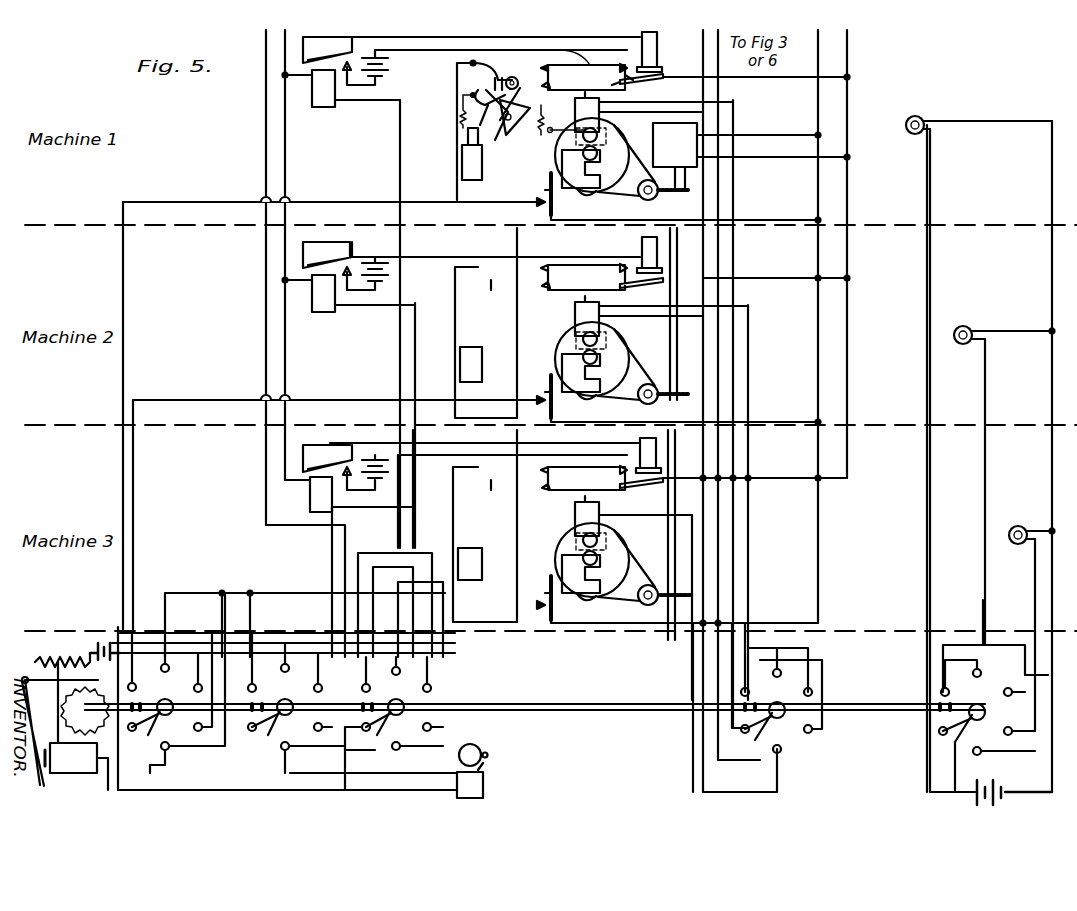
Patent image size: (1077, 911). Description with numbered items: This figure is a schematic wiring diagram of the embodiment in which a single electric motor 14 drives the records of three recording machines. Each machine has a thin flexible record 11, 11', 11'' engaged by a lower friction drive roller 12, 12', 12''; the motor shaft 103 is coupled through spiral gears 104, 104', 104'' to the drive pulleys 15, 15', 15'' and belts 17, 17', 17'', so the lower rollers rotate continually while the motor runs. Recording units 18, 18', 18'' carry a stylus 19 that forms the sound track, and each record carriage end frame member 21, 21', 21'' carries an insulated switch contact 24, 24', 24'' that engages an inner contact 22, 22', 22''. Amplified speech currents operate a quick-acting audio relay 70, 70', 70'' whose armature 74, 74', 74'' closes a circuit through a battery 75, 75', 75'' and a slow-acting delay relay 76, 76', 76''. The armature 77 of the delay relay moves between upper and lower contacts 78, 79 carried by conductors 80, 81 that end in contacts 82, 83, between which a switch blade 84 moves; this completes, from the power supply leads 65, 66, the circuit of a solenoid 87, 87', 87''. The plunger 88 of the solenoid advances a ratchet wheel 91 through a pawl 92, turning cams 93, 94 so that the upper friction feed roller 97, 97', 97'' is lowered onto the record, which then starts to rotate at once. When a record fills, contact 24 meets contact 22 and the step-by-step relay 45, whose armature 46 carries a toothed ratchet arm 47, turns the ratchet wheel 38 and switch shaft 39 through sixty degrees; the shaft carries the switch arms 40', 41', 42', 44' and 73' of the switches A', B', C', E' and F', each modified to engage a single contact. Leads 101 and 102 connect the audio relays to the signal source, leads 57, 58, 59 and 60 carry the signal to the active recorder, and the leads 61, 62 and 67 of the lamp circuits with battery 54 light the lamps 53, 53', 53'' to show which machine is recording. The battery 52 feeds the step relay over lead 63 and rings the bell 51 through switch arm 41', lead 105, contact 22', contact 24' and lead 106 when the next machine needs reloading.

The record 11 is at (617, 155).
The record 11' is at (615, 359).
The record 11'' is at (613, 560).
The friction drive roller 12 is at (592, 167).
The friction drive roller 12' is at (594, 371).
The friction drive roller 12'' is at (593, 572).
The electric motor 14 is at (693, 178).
The drive pulley 15 is at (640, 199).
The drive pulley 15' is at (639, 402).
The drive pulley 15'' is at (636, 604).
The belt 17 is at (626, 170).
The belt 17' is at (626, 375).
The belt 17'' is at (623, 576).
The recording unit 18 is at (641, 111).
The recording unit 18' is at (645, 315).
The recording unit 18'' is at (615, 598).
The stylus 19 is at (598, 133).
The end frame member 21 is at (591, 204).
The record carriage 21' is at (558, 373).
The record carriage 21'' is at (556, 573).
The inner contact 22 is at (515, 195).
The inner contact 22' is at (515, 394).
The inner contact 22'' is at (528, 628).
The switch contact 24 is at (538, 195).
The switch contact 24' is at (538, 397).
The switch contact 24'' is at (537, 597).
The ratchet wheel 38 is at (79, 761).
The switch shaft 39 is at (500, 706).
The switch arm 40' is at (170, 683).
The switch arm 41' is at (290, 703).
The switch arm 42' is at (781, 700).
The switch arm 44' is at (987, 718).
The step-by-step relay 45 is at (60, 778).
The armature 46 is at (33, 768).
The toothed ratchet arm 47 is at (40, 670).
The bell 51 is at (484, 788).
The battery 52 is at (92, 648).
The lamp 53 is at (979, 112).
The lamp 53' is at (1004, 321).
The lamp 53'' is at (1031, 521).
The battery 54 is at (1012, 798).
The lead 57 is at (716, 575).
The lead 58 is at (752, 590).
The lead 59 is at (710, 48).
The lead 60 is at (706, 42).
The lead 61 is at (928, 590).
The lead 62 is at (985, 590).
The lead 63 is at (120, 578).
The power supply lead 65 is at (850, 58).
The power supply lead 66 is at (820, 48).
The conductor 67 is at (1033, 596).
The quick acting relay 70 is at (342, 101).
The quick acting relay 70' is at (349, 306).
The quick acting relay 70'' is at (344, 498).
The switch arm 73' is at (394, 723).
The armature 74 is at (471, 50).
The armature 74' is at (471, 255).
The armature 74'' is at (471, 457).
The battery 75 is at (485, 70).
The battery 75' is at (383, 276).
The battery 75'' is at (485, 480).
The slow acting relay 76 is at (663, 49).
The slow acting relay 76' is at (619, 263).
The slow acting relay 76'' is at (621, 464).
The armature 77 is at (664, 80).
The upper contact 78 is at (624, 64).
The lower contact 79 is at (625, 85).
The conductor 80 is at (578, 62).
The conductor 81 is at (618, 88).
The upper contact 82 is at (555, 45).
The lower contact 83 is at (552, 80).
The switch blade 84 is at (456, 78).
The solenoid 87 is at (452, 162).
The solenoid 87' is at (471, 323).
The solenoid 87'' is at (477, 575).
The plunger 88 is at (466, 138).
The ratchet wheel 91 is at (515, 125).
The pawl 92 is at (512, 77).
The cam 93 is at (495, 135).
The cam 94 is at (558, 112).
The friction roller 97 is at (611, 130).
The friction roller 97' is at (613, 333).
The friction roller 97'' is at (614, 532).
The lead 101 is at (408, 508).
The lead 102 is at (415, 532).
The motor shaft 103 is at (676, 326).
The spiral gear 104 is at (675, 156).
The spiral gear 104' is at (683, 380).
The spiral gear 104'' is at (664, 542).
The lead 105 is at (134, 597).
The lead 106 is at (512, 507).
The switch A' is at (184, 761).
The switch B' is at (295, 761).
The switch C' is at (798, 759).
The switch E' is at (927, 761).
The switch F' is at (401, 761).